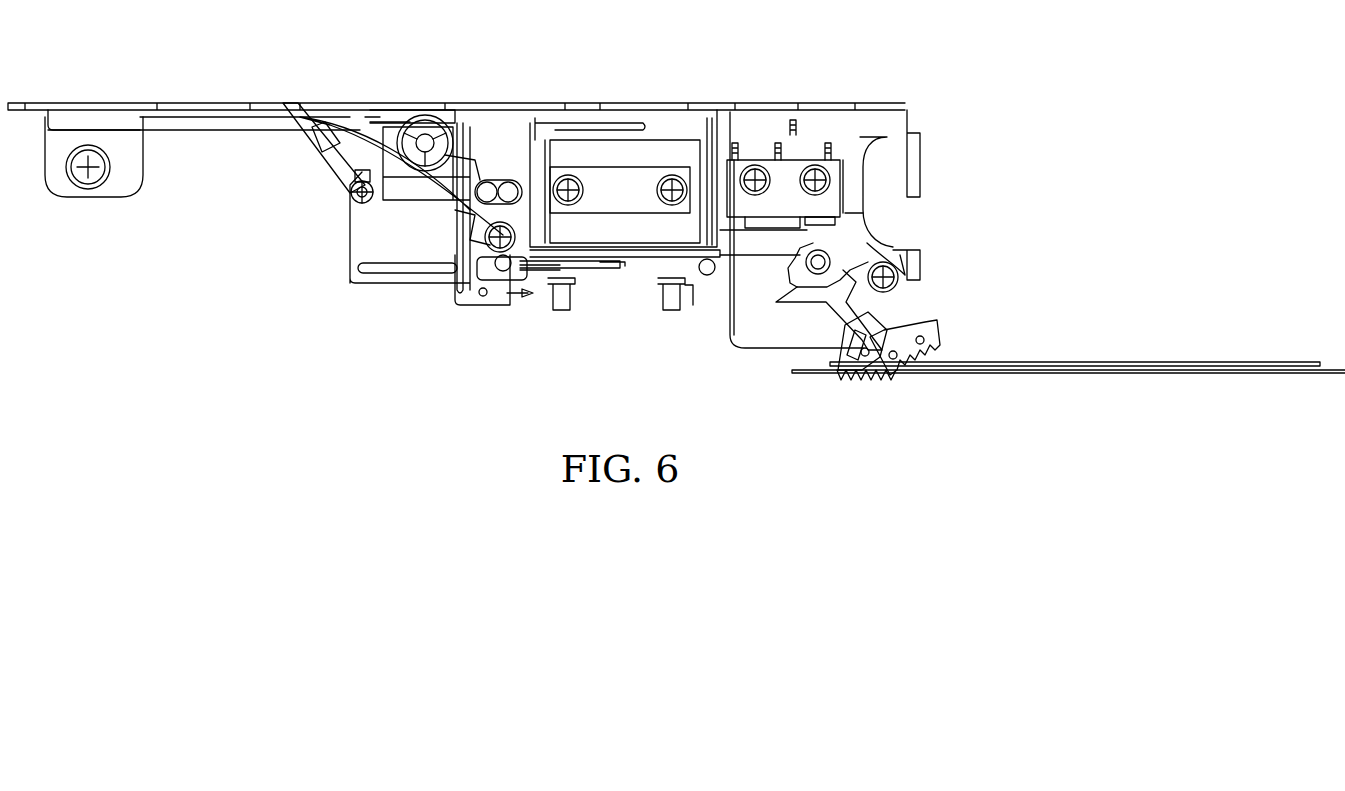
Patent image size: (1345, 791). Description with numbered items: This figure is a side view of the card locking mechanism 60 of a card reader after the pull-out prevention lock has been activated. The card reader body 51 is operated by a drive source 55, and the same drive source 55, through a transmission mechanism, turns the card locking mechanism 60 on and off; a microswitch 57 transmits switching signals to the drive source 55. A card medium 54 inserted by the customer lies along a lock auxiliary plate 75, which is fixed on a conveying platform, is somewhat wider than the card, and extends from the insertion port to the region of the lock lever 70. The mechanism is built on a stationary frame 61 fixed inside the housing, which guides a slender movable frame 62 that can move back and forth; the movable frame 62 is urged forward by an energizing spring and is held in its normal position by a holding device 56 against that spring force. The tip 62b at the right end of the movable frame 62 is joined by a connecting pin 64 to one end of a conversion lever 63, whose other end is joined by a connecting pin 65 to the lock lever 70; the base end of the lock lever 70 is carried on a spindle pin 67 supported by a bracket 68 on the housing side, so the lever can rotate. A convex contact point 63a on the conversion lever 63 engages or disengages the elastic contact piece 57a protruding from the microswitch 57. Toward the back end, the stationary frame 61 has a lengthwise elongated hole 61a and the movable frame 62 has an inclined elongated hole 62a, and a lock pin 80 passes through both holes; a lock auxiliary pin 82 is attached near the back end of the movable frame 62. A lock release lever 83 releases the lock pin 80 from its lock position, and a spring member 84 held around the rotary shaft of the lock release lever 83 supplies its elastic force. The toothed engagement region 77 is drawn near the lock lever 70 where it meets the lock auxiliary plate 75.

The card reader body 51 is at (937, 128).
The card medium 54 is at (1167, 360).
The drive source 55 is at (660, 150).
The holding device 56 is at (463, 165).
The microswitch 57 is at (772, 167).
The elastic contact piece 57a is at (760, 230).
The card locking mechanism 60 is at (378, 364).
The stationary frame 61 is at (386, 229).
The elongated hole 61a is at (375, 272).
The movable frame 62 is at (484, 313).
The inclined elongated hole 62a is at (507, 280).
The tip 62b is at (820, 225).
The conversion lever 63 is at (858, 279).
The convex contact point 63a is at (890, 253).
The connecting pin 64 is at (797, 287).
The connecting pin 65 is at (862, 372).
The spindle pin 67 is at (900, 273).
The bracket 68 is at (893, 243).
The lock lever 70 is at (956, 325).
The lock auxiliary plate 75 is at (1115, 374).
The teeth 77 is at (888, 378).
The lock pin 80 is at (497, 280).
The lock auxiliary pin 82 is at (483, 298).
The lock release lever 83 is at (213, 120).
The spring member 84 is at (431, 122).